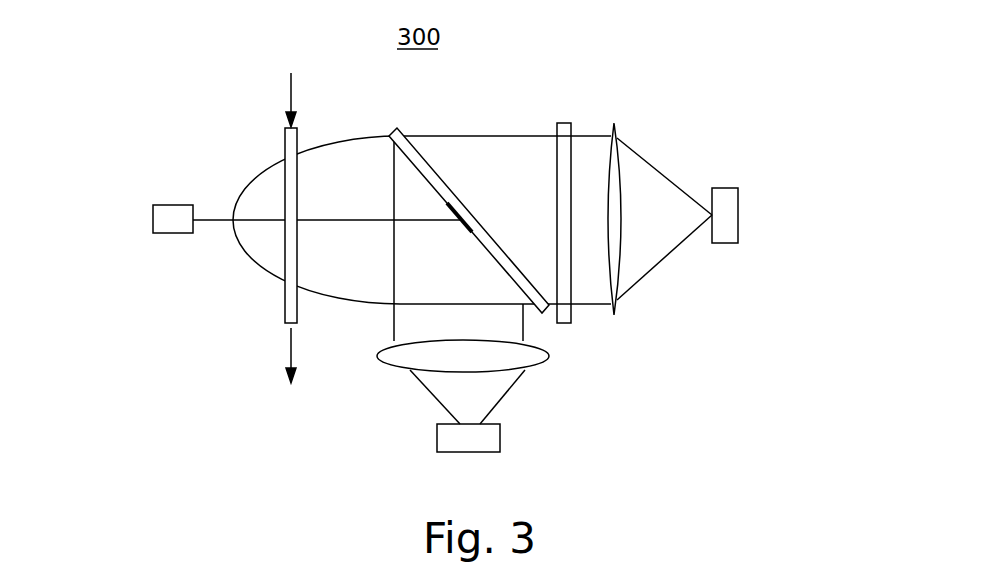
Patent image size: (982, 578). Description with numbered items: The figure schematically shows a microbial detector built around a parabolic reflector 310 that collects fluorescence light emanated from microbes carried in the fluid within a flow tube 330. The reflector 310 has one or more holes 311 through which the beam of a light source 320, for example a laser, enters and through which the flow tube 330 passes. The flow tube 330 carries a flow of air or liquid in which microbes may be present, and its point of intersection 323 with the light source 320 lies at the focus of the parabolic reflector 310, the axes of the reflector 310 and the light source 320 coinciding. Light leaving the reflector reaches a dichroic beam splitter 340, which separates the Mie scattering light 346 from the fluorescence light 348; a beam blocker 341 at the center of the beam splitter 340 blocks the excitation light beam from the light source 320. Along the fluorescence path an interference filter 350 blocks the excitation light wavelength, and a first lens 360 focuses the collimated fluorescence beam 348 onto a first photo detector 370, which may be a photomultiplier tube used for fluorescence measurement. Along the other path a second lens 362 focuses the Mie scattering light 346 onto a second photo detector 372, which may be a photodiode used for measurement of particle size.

The parabolic reflector 310 is at (233, 237).
The holes 311 is at (300, 147).
The light source 320 is at (153, 217).
The point of intersection 323 is at (294, 216).
The flow tube 330 is at (284, 262).
The dichroic beam splitter 340 is at (450, 195).
The beam blocker 341 is at (461, 225).
The Mie scattering light 346 is at (394, 332).
The fluorescence light 348 is at (528, 142).
The interference filter 350 is at (568, 165).
The first lens 360 is at (617, 305).
The second lens 362 is at (527, 368).
The first photo detector 370 is at (738, 213).
The second photo detector 372 is at (477, 452).